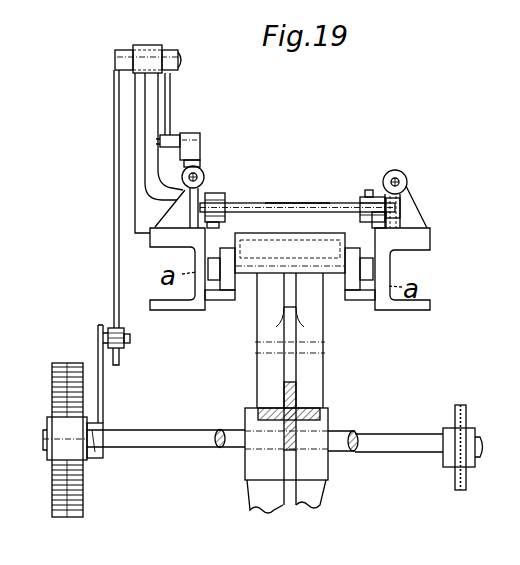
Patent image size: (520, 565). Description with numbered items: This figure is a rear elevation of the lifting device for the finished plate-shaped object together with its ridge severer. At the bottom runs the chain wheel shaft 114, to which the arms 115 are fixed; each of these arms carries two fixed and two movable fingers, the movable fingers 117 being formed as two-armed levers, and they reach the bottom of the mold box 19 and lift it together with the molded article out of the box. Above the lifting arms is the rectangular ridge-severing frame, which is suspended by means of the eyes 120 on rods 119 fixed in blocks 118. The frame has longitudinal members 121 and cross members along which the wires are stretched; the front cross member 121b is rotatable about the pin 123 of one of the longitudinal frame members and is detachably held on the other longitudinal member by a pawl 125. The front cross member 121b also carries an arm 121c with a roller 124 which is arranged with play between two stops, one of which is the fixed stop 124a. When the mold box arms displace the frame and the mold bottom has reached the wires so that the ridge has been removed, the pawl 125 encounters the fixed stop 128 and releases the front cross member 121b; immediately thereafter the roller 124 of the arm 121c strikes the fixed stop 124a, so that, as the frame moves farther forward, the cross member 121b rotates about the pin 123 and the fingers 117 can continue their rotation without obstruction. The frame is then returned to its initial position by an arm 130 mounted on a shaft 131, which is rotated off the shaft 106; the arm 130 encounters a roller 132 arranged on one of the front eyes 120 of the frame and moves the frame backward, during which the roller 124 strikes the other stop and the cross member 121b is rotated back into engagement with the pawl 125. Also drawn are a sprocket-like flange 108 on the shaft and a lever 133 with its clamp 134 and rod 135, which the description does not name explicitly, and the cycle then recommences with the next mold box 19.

The mold box 19 is at (294, 240).
The shaft 106 is at (265, 432).
The sprocket flange 108 is at (470, 391).
The chain wheel shaft 114 is at (352, 435).
The arms 115 is at (312, 381).
The movable fingers 117 is at (258, 290).
The blocks 118 is at (208, 187).
The rods 119 is at (206, 174).
The eyes 120 is at (203, 141).
The longitudinal frame members 121 is at (245, 205).
The front cross member 121b is at (282, 207).
The arm 121c is at (404, 200).
The pin 123 is at (368, 196).
The roller 124 is at (376, 222).
The fixed stop 124a is at (386, 256).
The pawl 125 is at (226, 216).
The fixed stop 128 is at (210, 229).
The arm 130 is at (178, 153).
The shaft 131 is at (184, 58).
The roller 132 is at (181, 138).
The lever 133 is at (104, 392).
The clamp 134 is at (131, 338).
The rod 135 is at (114, 211).